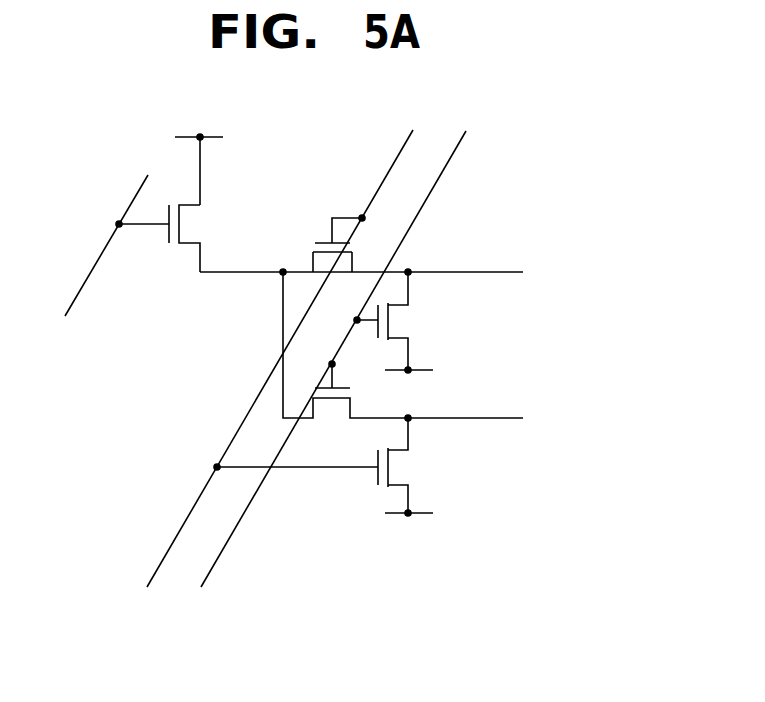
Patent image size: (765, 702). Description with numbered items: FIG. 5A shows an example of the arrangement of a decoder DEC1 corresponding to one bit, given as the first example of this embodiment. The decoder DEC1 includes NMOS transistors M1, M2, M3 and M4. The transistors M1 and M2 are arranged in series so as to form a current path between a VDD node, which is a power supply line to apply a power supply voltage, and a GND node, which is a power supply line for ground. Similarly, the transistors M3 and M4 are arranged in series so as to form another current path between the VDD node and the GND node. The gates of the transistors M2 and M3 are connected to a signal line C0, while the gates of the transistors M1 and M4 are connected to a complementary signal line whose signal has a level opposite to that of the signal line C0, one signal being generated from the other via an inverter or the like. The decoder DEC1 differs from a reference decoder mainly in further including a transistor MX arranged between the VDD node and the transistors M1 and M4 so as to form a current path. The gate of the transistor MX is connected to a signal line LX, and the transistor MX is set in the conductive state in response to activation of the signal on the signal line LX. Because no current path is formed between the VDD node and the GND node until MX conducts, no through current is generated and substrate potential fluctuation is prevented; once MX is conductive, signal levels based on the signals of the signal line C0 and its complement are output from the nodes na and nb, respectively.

The VDD node VDD is at (199, 155).
The signal line LX is at (95, 261).
The transistor MX is at (159, 243).
The transistor M1 is at (325, 243).
The transistor M2 is at (401, 321).
The transistor M3 is at (332, 407).
The transistor M4 is at (331, 465).
The GND node GND is at (407, 461).
The node na is at (379, 273).
The node nb is at (421, 351).
The signal line C0 is at (326, 373).
The decoder DEC1 is at (337, 361).